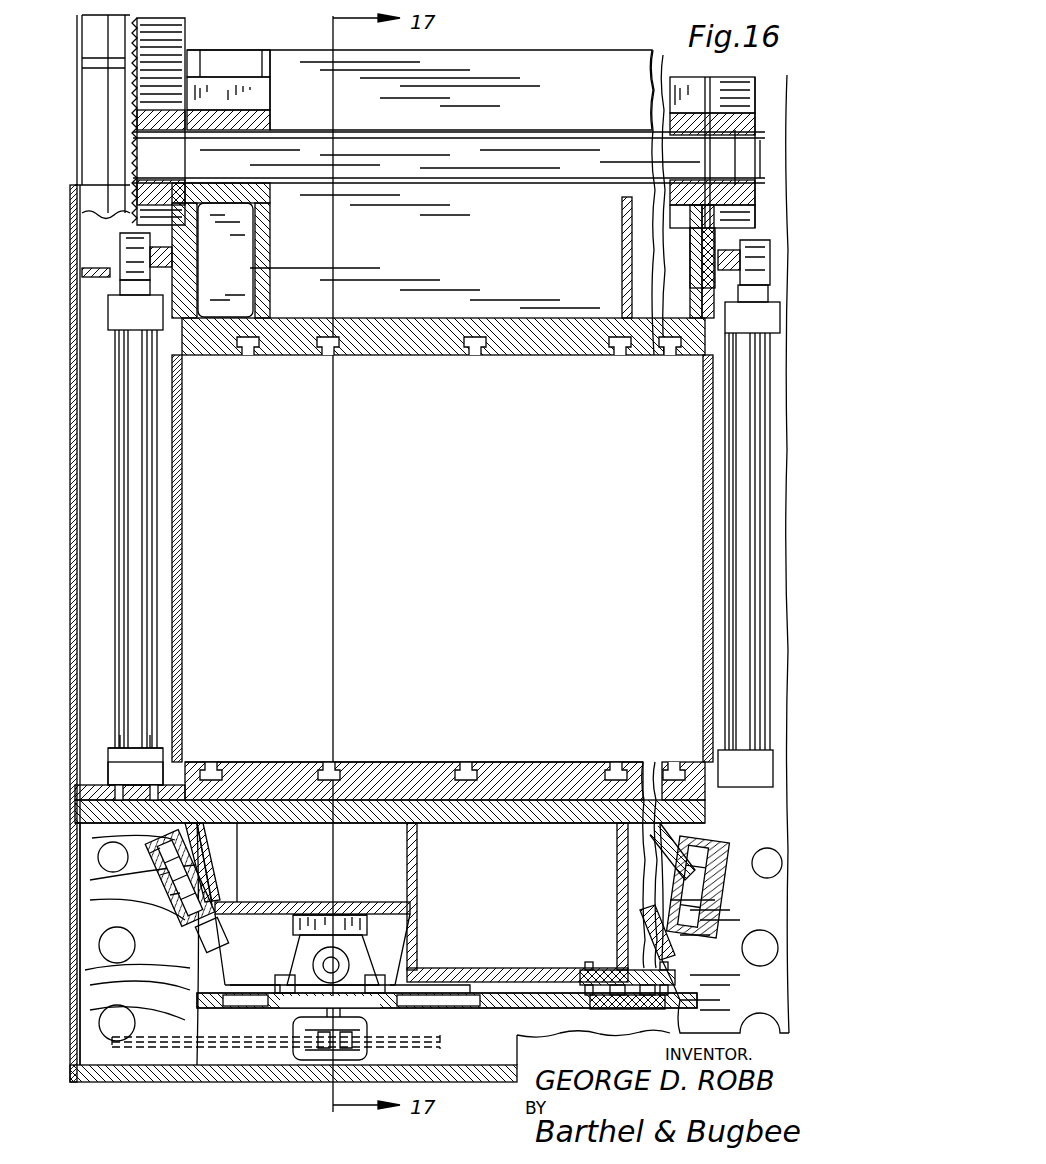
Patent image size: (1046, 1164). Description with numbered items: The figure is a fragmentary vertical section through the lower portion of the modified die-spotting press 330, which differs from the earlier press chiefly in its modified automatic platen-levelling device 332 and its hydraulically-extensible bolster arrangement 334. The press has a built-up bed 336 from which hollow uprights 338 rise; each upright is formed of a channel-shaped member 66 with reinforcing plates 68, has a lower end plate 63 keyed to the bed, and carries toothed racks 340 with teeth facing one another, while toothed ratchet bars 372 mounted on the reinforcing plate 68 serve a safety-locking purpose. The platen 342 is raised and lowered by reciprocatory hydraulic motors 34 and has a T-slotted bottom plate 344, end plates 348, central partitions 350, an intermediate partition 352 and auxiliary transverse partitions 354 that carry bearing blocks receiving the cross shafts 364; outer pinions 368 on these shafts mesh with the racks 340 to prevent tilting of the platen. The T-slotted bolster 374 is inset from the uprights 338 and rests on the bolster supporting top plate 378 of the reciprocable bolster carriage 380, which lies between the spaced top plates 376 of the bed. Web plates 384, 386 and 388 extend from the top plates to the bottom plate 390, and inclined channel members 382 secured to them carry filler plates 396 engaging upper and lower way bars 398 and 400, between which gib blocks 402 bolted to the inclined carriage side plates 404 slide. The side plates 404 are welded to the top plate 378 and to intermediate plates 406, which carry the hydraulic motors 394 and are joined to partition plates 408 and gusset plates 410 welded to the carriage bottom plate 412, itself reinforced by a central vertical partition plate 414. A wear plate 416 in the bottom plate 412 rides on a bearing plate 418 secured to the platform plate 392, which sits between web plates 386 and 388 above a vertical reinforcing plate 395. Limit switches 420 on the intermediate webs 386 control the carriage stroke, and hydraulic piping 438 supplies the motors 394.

The reciprocatory hydraulic motor 34 is at (170, 540).
The lower end plate 63 is at (75, 792).
The channel-shaped member 66 is at (76, 244).
The reinforcing plate 68 is at (100, 57).
The die-spotting press 330 is at (625, 50).
The automatic platen-levelling device 332 is at (200, 42).
The hydraulically-extensible bolster arrangement 334 is at (505, 760).
The bed 336 is at (72, 847).
The upright 338 is at (70, 550).
The toothed rack 340 is at (125, 30).
The platen 342 is at (530, 50).
The T-slotted bottom plate 344 is at (432, 347).
The end plate 348 is at (198, 257).
The central partition 350 is at (620, 238).
The intermediate partition 352 is at (480, 36).
The auxiliary transverse partition 354 is at (262, 259).
The cross shaft 364 is at (590, 142).
The outer pinion 368 is at (85, 187).
The toothed ratchet bar 372 is at (120, 134).
The bolster 374 is at (400, 762).
The top plate 376 is at (75, 799).
The bolster supporting top plate 378 is at (345, 872).
The bolster carriage 380 is at (570, 800).
The channel member 382 is at (172, 897).
The web plate 384 is at (82, 828).
The intermediate web plate 386 is at (90, 972).
The lower web plate 388 is at (100, 1022).
The bottom plate 390 is at (158, 1072).
The platform plate 392 is at (197, 1002).
The reciprocatory hydraulic motor 394 is at (365, 960).
The vertical reinforcing plate 395 is at (285, 1064).
The filler plate 396 is at (162, 877).
The upper way bar 398 is at (150, 855).
The lower way bar 400 is at (100, 942).
The gib block 402 is at (200, 882).
The carriage side plate 404 is at (208, 852).
The intermediate plate 406 is at (385, 884).
The partition plate 408 is at (418, 848).
The gusset plate 410 is at (395, 937).
The carriage bottom plate 412 is at (520, 977).
The central vertical partition plate 414 is at (617, 848).
The wear plate 416 is at (620, 977).
The bearing plate 418 is at (630, 1007).
The limit switch 420 is at (225, 942).
The hydraulic piping 438 is at (320, 1062).